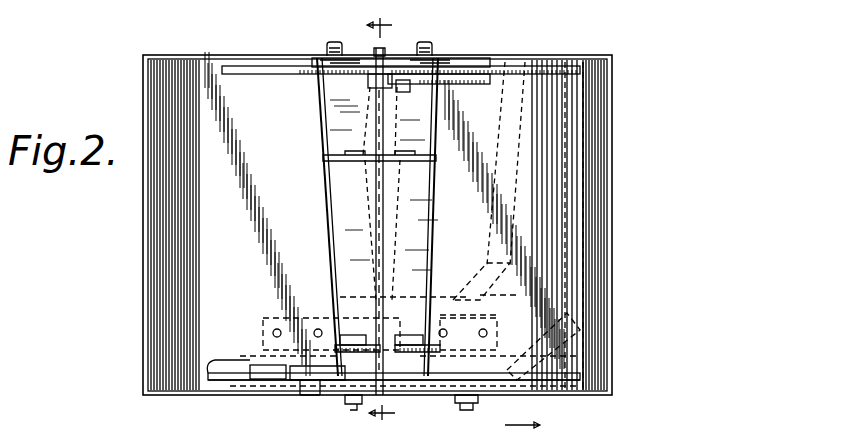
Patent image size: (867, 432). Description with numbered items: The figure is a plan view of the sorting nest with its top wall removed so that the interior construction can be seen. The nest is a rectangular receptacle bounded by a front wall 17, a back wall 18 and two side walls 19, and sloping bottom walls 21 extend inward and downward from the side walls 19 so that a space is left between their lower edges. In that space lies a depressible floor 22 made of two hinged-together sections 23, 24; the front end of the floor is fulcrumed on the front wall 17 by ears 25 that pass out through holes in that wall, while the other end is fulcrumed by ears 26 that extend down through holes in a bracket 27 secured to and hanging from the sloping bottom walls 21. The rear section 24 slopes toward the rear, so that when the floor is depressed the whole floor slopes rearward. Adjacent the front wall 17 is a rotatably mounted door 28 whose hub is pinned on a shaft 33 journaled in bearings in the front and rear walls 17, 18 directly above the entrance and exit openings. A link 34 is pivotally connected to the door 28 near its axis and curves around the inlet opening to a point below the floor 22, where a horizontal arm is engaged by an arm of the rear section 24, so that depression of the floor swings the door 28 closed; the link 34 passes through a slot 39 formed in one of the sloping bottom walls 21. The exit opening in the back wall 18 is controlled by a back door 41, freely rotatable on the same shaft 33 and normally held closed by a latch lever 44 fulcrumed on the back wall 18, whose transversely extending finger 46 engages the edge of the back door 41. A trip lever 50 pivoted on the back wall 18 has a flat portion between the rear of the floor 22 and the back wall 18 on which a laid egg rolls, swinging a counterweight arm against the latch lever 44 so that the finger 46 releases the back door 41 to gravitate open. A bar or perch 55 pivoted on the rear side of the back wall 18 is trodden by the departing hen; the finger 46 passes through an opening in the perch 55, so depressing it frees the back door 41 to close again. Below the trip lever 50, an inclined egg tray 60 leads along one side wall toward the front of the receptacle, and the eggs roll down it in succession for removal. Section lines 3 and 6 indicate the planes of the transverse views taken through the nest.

The section line 3- 3 is at (381, 217).
The section line 6- 6 is at (522, 416).
The front wall 17 is at (537, 55).
The back wall 18 is at (586, 392).
The side walls 19 is at (612, 218).
The sloping bottom walls 21 is at (167, 188).
The depressible floor 22 is at (335, 194).
The front floor section 23 is at (333, 119).
The rear floor section 24 is at (340, 243).
The ears 25 is at (334, 41).
The ears 26 is at (352, 335).
The bracket 27 is at (498, 316).
The rotatably mounted door 28 is at (258, 68).
The shaft 33 is at (383, 205).
The link 34 is at (455, 85).
The slot 39 is at (467, 60).
The back door 41 is at (553, 384).
The latch lever 44 is at (276, 378).
The finger 46 is at (345, 402).
The trip lever 50 is at (364, 370).
The bar or perch 55 is at (443, 385).
The inclined egg tray 60 is at (573, 254).